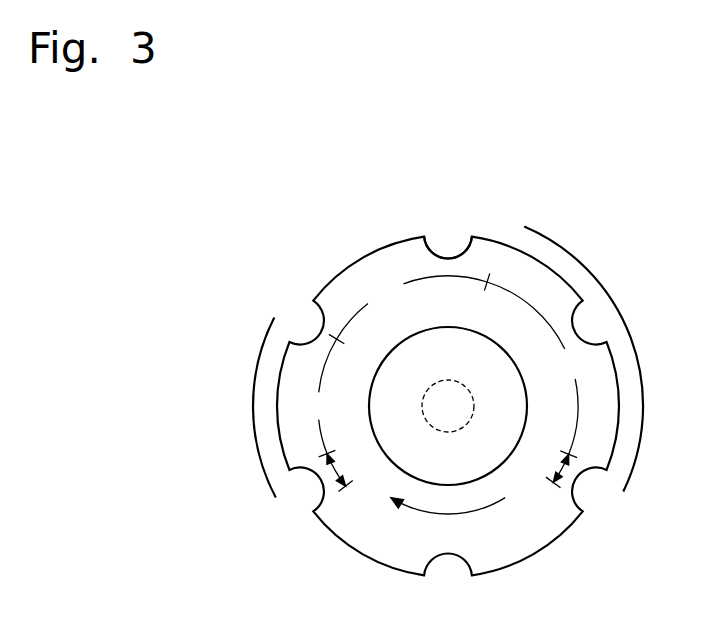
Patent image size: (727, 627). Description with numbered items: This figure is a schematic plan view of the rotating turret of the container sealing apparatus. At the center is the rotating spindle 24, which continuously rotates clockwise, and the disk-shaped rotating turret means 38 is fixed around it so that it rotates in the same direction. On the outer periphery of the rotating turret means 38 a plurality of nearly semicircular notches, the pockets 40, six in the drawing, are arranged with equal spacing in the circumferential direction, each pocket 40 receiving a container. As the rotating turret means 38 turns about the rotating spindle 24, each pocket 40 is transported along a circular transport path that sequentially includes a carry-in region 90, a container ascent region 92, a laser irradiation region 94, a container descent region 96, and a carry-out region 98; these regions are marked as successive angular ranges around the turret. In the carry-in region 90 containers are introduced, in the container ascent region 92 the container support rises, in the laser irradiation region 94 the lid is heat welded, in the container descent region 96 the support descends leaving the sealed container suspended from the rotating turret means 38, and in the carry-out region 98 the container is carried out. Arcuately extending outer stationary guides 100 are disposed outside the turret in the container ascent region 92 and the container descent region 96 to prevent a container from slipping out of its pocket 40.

The rotating turret means 38 is at (347, 260).
The pocket 40 is at (445, 236).
The outer stationary guide 100 is at (600, 279).
The rotating spindle 24 is at (466, 380).
The carry-in region 90 is at (348, 472).
The container ascent region 92 is at (317, 398).
The laser irradiation region 94 is at (409, 308).
The container descent region 96 is at (537, 370).
The carry-out region 98 is at (547, 466).